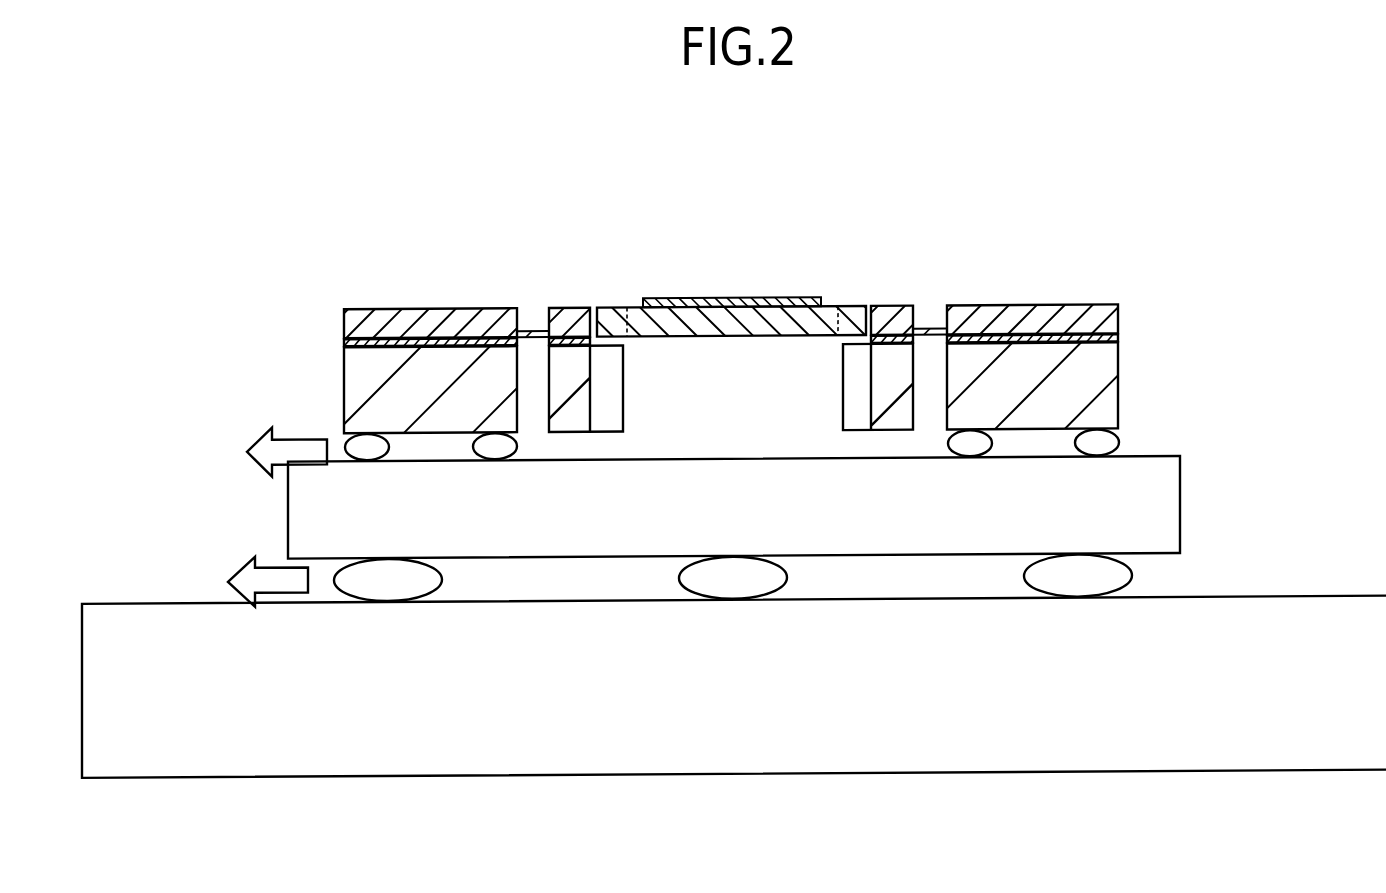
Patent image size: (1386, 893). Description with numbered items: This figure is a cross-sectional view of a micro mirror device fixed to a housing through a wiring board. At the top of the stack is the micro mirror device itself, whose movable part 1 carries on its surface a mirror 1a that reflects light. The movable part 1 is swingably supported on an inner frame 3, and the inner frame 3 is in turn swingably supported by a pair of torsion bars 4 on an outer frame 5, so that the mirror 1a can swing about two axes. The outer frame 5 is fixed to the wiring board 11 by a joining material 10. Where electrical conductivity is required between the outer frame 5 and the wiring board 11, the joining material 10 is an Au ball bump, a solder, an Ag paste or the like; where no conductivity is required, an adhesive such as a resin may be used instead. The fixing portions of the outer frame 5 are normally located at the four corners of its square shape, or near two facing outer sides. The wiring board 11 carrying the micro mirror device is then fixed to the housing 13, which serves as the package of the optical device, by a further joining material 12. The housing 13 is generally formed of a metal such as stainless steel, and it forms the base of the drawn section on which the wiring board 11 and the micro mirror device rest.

The movable part 1 is at (732, 323).
The mirror 1a is at (743, 300).
The inner frame 3 is at (848, 311).
The torsion bars 4 is at (932, 324).
The outer frame 5 is at (1050, 317).
The joining material 10 is at (1107, 448).
The wiring board 11 is at (1157, 521).
The joining material 12 is at (1110, 586).
The housing 13 is at (1293, 601).